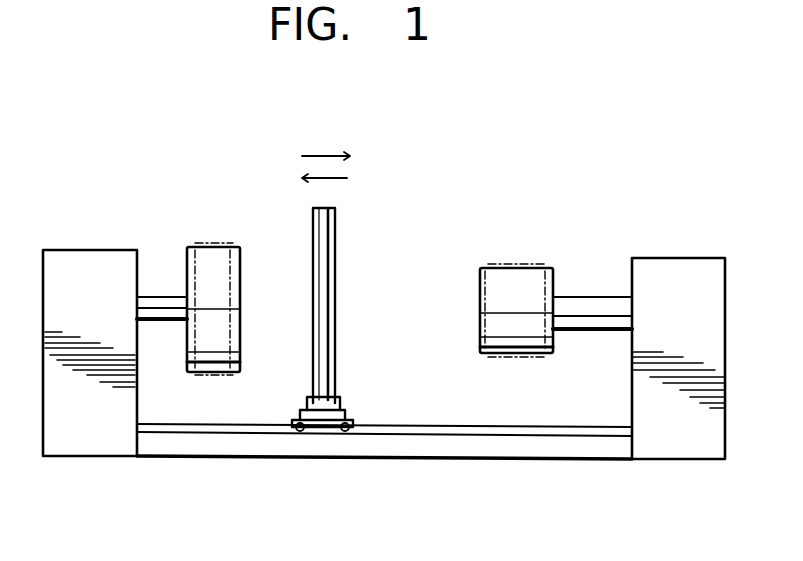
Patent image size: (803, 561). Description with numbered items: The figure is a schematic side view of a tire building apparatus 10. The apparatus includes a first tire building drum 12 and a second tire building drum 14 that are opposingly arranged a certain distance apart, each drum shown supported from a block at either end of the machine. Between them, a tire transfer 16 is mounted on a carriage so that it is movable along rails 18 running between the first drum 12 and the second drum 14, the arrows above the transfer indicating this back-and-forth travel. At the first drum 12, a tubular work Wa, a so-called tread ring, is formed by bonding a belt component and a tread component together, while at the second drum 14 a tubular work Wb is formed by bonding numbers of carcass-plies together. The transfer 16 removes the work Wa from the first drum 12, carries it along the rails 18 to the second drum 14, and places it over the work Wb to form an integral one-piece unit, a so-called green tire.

The tire building apparatus 10 is at (538, 163).
The first tire building drum 12 is at (211, 235).
The second tire building drum 14 is at (516, 254).
The tire transfer 16 is at (352, 247).
The rails 18 is at (218, 436).
The tubular work Wa is at (220, 375).
The tubular work Wb is at (512, 357).